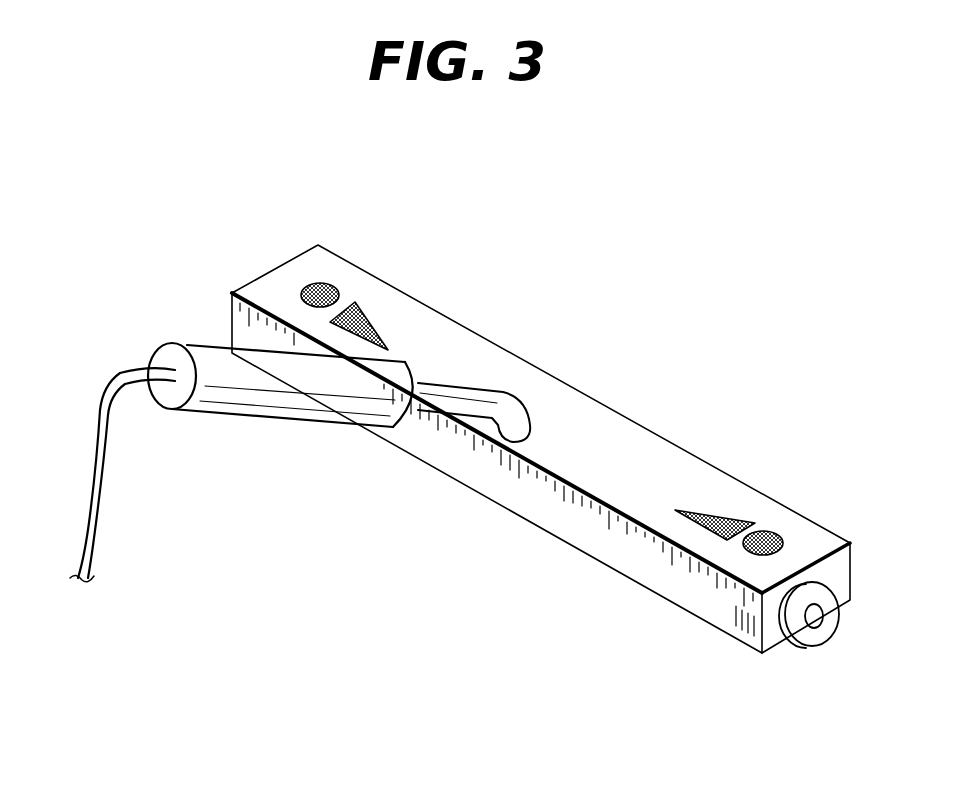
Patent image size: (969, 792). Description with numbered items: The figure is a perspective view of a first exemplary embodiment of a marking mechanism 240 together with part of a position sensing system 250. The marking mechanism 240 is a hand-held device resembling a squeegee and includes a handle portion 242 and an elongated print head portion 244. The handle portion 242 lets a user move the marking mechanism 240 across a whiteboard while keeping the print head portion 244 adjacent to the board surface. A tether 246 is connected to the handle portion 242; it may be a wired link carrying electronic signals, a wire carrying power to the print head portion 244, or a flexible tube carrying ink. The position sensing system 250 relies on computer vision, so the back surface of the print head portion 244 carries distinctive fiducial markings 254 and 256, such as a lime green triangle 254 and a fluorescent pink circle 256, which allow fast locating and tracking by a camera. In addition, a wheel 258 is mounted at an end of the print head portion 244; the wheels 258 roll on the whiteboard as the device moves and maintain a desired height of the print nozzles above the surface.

The marking mechanism 240 is at (541, 444).
The handle portion 242 is at (263, 400).
The print head portion 244 is at (617, 420).
The tether 246 is at (97, 448).
The position sensing system 250 is at (718, 512).
The fiducial marking (triangle) 254 is at (367, 320).
The fiducial marking (circle) 256 is at (327, 285).
The wheel 258 is at (817, 628).